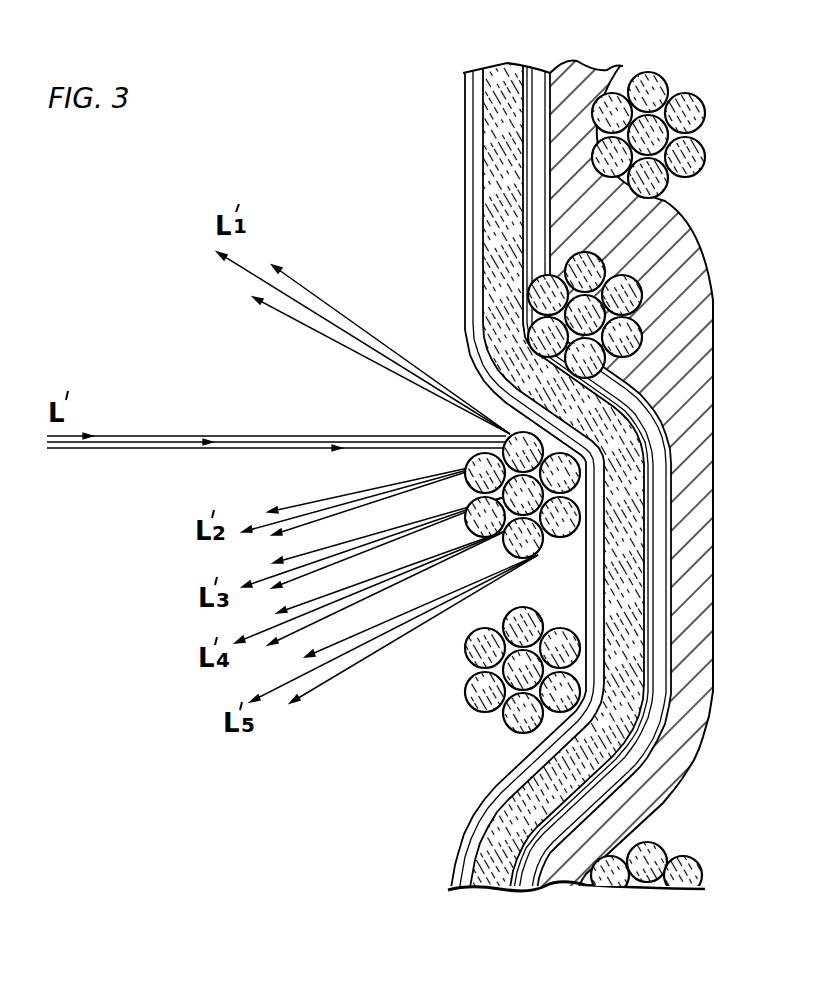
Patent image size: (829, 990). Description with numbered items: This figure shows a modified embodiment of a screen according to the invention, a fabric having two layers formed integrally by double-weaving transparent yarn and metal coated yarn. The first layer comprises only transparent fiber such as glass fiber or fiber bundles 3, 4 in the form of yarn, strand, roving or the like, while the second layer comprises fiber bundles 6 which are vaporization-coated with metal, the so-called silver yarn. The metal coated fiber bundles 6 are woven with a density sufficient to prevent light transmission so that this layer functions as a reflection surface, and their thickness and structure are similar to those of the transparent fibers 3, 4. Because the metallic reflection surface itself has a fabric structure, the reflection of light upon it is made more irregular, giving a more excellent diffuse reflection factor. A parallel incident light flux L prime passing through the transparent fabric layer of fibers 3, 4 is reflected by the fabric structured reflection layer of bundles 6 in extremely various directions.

The transparent fiber 3 is at (485, 118).
The transparent fiber bundle 4 is at (687, 112).
The metal vaporization-coated fiber bundles 6 is at (702, 348).